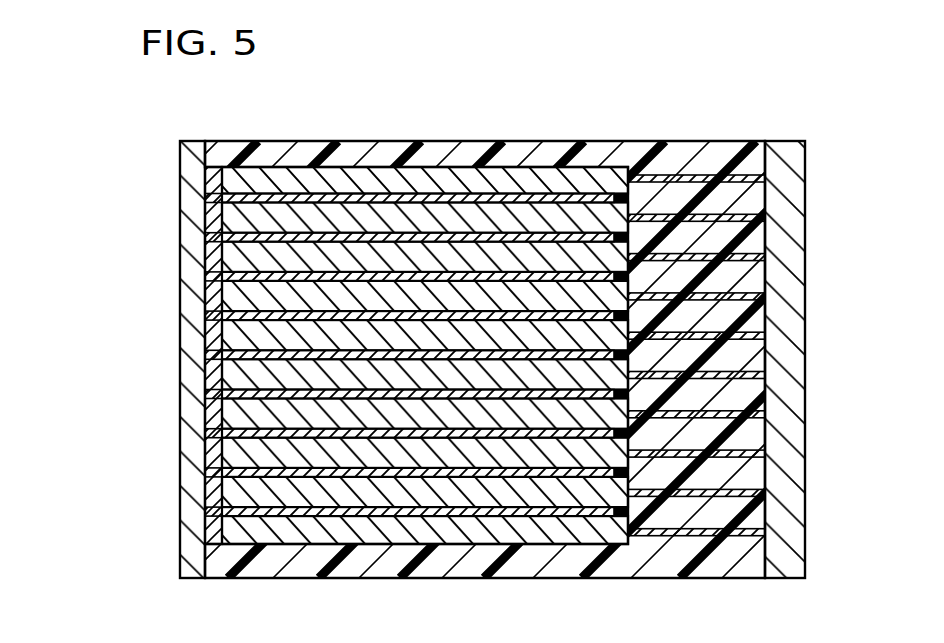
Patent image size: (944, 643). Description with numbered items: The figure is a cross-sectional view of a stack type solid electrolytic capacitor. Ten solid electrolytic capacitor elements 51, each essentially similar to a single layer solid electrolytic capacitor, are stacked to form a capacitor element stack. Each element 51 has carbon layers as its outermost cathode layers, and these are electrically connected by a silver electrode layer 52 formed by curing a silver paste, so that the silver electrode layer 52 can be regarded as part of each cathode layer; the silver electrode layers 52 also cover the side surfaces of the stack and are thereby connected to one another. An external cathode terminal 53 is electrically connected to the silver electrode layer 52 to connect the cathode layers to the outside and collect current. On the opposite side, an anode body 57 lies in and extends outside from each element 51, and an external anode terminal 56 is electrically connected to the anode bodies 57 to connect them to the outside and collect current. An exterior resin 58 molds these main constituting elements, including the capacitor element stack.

The solid electrolytic capacitor element 51 is at (472, 178).
The silver electrode layer 52 is at (545, 200).
The external cathode terminal 53 is at (195, 343).
The external anode terminal 56 is at (782, 365).
The anode body 57 is at (667, 178).
The exterior resin 58 is at (728, 160).